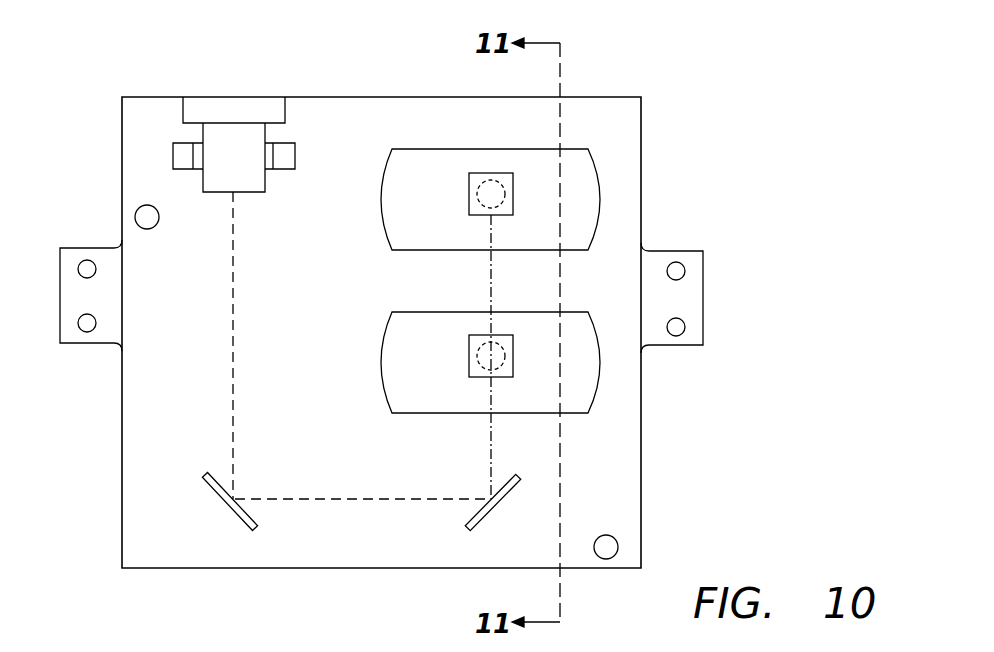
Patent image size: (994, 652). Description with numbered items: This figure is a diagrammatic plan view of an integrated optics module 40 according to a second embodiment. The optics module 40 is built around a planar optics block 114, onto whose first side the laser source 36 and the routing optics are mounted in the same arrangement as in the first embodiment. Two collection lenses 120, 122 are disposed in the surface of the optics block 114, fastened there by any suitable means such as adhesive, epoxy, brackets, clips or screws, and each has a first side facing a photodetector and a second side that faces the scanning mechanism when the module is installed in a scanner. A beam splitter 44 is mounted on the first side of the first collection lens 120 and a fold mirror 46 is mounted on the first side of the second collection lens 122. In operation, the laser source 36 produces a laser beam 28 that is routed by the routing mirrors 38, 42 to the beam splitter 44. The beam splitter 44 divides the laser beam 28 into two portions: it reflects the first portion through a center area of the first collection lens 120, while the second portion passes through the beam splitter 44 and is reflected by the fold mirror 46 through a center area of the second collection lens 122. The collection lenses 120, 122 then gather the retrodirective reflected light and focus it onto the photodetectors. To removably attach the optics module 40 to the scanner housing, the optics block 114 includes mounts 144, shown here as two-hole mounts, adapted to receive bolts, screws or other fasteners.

The optics module 40 is at (617, 58).
The optics block 114 is at (390, 118).
The mounts 144 is at (685, 302).
The laser source 36 is at (249, 184).
The laser beam 28 is at (234, 322).
The collection lens 122 is at (598, 179).
The fold mirror 46 is at (469, 191).
The collection lens 120 is at (598, 387).
The beam splitter 44 is at (469, 354).
The routing mirror 38 is at (222, 507).
The routing mirror 42 is at (502, 501).